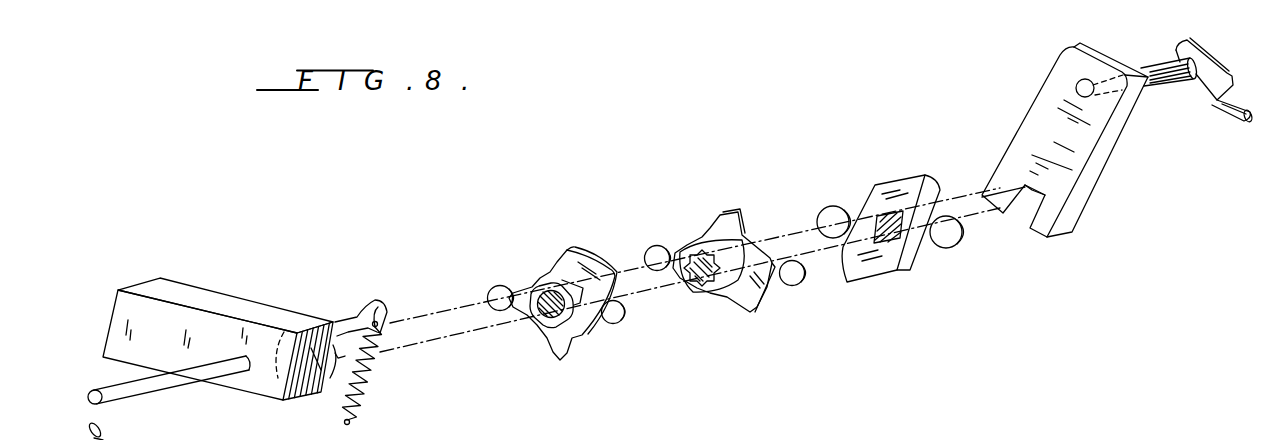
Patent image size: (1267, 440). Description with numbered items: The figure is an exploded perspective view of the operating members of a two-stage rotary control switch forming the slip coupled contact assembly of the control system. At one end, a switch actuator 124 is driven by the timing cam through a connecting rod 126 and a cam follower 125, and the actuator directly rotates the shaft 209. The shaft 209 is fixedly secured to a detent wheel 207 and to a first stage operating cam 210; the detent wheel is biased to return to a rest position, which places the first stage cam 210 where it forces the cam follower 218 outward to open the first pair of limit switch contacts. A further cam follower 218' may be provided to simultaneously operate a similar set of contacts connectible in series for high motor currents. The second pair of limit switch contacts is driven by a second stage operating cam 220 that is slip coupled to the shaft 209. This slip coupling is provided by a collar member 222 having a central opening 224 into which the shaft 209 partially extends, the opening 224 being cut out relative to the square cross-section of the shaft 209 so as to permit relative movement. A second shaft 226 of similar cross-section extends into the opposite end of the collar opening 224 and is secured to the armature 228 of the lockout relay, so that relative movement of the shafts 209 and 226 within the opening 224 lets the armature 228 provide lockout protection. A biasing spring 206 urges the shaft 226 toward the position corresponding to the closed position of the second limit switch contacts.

The switch actuator 124 is at (1052, 92).
The cam follower 125 is at (1220, 60).
The connecting rod 126 is at (1160, 49).
The biasing spring 206 is at (370, 379).
The detent wheel 207 is at (898, 185).
The shaft 209 is at (699, 276).
The first stage operating cam 210 is at (726, 227).
The cam follower 218 is at (793, 291).
The cam follower 218' is at (667, 235).
The second stage operating cam 220 is at (579, 262).
The collar member 222 is at (547, 323).
The central opening 224 is at (360, 316).
The second shaft 226 is at (538, 319).
The armature 228 is at (216, 299).